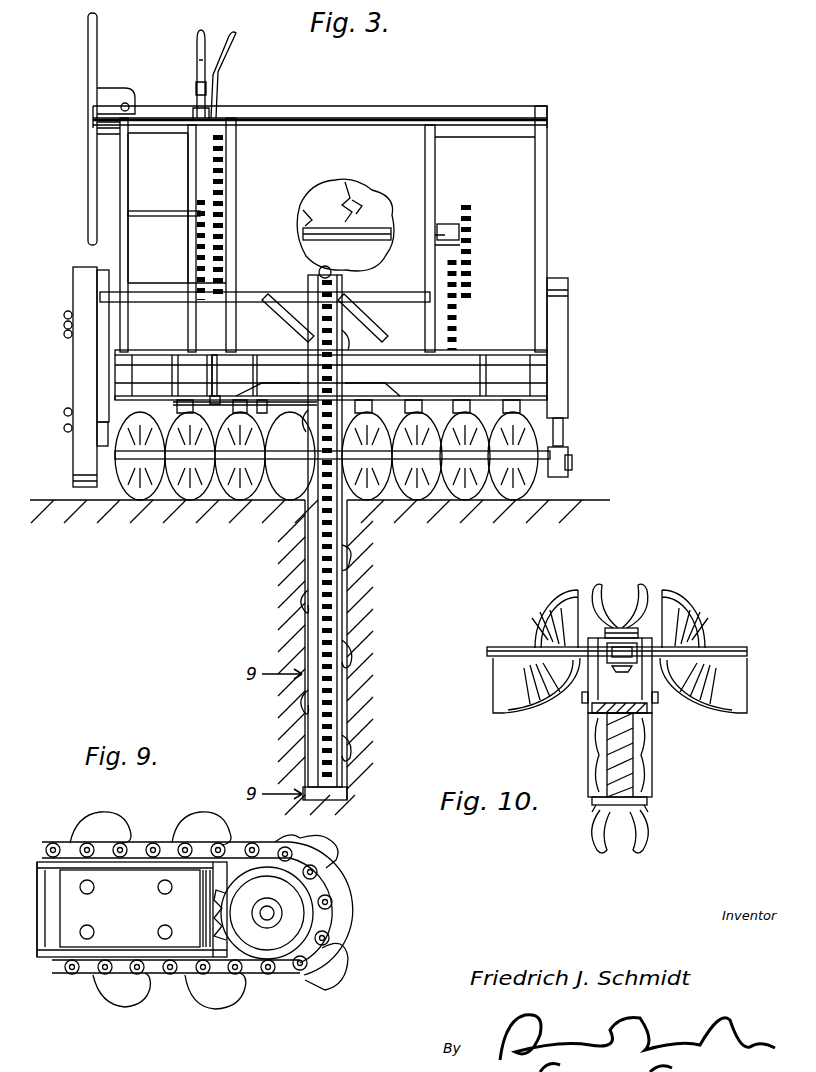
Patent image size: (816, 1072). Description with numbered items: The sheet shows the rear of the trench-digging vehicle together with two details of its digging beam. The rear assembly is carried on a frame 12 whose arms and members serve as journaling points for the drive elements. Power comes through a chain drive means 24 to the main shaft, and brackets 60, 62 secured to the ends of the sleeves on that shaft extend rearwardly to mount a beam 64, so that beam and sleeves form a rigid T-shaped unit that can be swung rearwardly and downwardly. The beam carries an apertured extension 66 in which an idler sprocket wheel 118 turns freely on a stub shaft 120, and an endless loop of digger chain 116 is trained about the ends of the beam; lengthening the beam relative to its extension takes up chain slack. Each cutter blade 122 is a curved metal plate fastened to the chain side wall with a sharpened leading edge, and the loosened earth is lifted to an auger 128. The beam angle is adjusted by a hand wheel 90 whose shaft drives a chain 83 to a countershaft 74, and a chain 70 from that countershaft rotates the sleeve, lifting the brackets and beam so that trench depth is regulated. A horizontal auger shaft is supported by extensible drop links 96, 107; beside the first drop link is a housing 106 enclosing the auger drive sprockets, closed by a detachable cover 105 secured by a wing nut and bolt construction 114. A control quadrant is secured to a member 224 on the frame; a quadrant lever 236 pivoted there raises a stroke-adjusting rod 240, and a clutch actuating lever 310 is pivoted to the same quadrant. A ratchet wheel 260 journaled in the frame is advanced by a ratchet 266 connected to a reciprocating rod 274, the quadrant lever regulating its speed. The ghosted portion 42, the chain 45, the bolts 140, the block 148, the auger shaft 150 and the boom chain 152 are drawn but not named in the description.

In FIG. 3, the frame 12 is at (562, 166).
In FIG. 3, the chain drive means 24 is at (460, 334).
In FIG. 3, the motor 42 is at (380, 226).
In FIG. 3, the sprocket chain 45 is at (470, 258).
In FIG. 3, the bracket 60 is at (362, 326).
In FIG. 3, the bracket 62 is at (296, 324).
In FIG. 3, the beam 64 is at (338, 636).
In FIG. 9, the beam 64 is at (44, 918).
In FIG. 10, the beam 64 is at (622, 755).
In FIG. 9, the extension 66 is at (136, 862).
In FIG. 3, the chain 70 is at (197, 262).
In FIG. 3, the countershaft 74 is at (146, 212).
In FIG. 3, the chain 83 is at (224, 190).
In FIG. 3, the hand wheel 90 is at (98, 45).
In FIG. 3, the drop link 96 is at (100, 404).
In FIG. 3, the detachable cover 105 is at (73, 460).
In FIG. 3, the housing 106 is at (67, 377).
In FIG. 3, the drop link 107 is at (568, 376).
In FIG. 3, the wing nut and bolt construction 114 is at (62, 328).
In FIG. 3, the digger chain 116 is at (333, 590).
In FIG. 9, the digger chain 116 is at (236, 851).
In FIG. 10, the digger chain 116 is at (640, 646).
In FIG. 9, the idler sprocket wheel 118 is at (310, 892).
In FIG. 9, the stub shaft 120 is at (270, 916).
In FIG. 9, the cutter blade 122 is at (108, 812).
In FIG. 10, the cutter blade 122 is at (650, 582).
In FIG. 3, the auger 128 is at (462, 496).
In FIG. 10, the auger 128 is at (510, 712).
In FIG. 10, the bolts 140 is at (592, 672).
In FIG. 10, the block 148 is at (602, 700).
In FIG. 10, the auger shaft 150 is at (505, 652).
In FIG. 3, the boom chain 152 is at (347, 726).
In FIG. 3, the member 224 is at (346, 108).
In FIG. 3, the quadrant lever 236 is at (196, 62).
In FIG. 3, the stroke-adjusting rod 240 is at (186, 170).
In FIG. 3, the ratchet wheel 260 is at (358, 206).
In FIG. 3, the ratchet 266 is at (311, 212).
In FIG. 3, the reciprocating rod 274 is at (258, 396).
In FIG. 3, the clutch actuating lever 310 is at (221, 70).